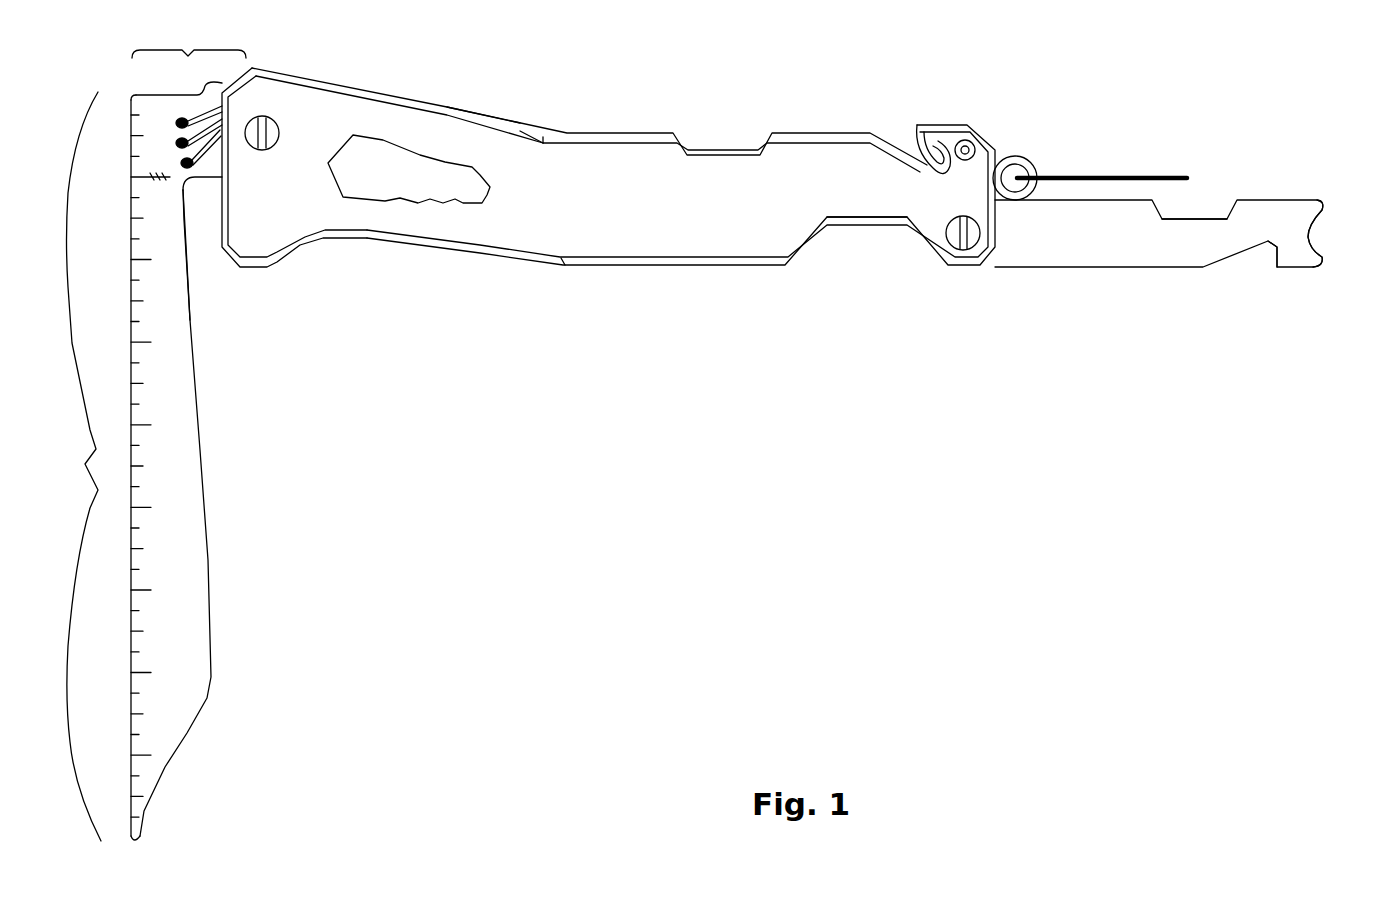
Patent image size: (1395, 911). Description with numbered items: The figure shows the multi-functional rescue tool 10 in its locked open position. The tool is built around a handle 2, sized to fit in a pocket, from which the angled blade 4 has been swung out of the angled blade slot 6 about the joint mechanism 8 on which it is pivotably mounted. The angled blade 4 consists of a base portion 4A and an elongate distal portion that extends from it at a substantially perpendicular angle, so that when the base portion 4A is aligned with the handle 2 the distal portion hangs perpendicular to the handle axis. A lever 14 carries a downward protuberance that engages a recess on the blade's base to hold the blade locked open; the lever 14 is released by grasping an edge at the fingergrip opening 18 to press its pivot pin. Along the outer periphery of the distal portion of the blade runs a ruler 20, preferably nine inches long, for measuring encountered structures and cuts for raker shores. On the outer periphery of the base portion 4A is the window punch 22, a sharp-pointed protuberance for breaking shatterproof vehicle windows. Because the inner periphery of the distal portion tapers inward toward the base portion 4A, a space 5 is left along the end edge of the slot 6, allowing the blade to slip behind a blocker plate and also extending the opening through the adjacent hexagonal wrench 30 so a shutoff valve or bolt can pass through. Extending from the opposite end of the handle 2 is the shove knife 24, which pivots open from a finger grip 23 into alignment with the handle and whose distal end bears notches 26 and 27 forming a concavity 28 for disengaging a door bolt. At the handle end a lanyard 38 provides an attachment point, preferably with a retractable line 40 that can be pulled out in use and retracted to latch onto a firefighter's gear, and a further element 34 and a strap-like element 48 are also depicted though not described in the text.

The handle 2 is at (573, 197).
The angled blade 4 is at (183, 408).
The base portion 4A is at (189, 43).
The space 5 is at (205, 250).
The angled blade slot 6 is at (322, 238).
The joint mechanism 8 is at (266, 128).
The multi-functional rescue tool 10 is at (1049, 51).
The lever 14 is at (483, 113).
The fingergrip opening 18 is at (532, 125).
The ruler 20 is at (130, 197).
The window punch 22 is at (220, 83).
The finger grip 23 is at (867, 247).
The shove knife 24 is at (1185, 237).
The notch 26 is at (1220, 218).
The notch 27 is at (1265, 252).
The concavity 28 is at (1322, 233).
The hexagonal wrench 30 is at (392, 177).
The cutter hook 34 is at (907, 140).
The lanyard 38 is at (1009, 155).
The retractable line 40 is at (1175, 176).
The strap 48 is at (78, 466).